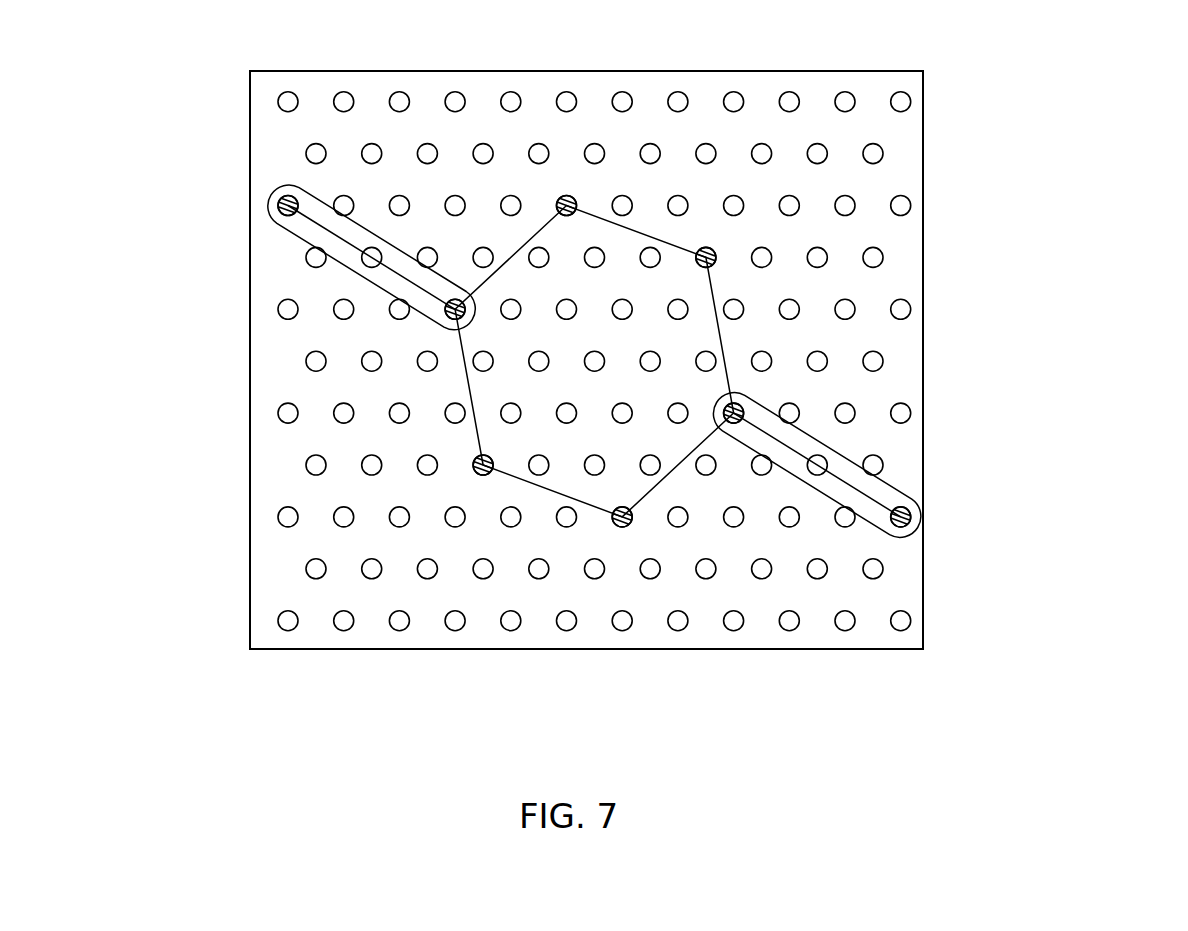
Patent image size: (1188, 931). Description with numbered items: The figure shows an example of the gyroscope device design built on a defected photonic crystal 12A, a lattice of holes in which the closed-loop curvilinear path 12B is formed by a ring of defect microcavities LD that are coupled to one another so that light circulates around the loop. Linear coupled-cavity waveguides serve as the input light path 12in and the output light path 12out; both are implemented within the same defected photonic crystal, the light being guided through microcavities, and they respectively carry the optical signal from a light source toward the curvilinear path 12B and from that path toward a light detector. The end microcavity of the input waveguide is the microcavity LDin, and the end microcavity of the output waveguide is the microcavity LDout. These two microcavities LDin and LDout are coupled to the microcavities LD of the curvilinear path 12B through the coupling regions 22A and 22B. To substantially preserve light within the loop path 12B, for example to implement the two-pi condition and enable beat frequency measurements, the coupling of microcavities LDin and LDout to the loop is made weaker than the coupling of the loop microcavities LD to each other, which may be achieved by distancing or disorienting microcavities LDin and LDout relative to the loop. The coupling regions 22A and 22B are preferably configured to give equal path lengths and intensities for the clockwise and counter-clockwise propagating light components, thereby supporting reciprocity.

The substrate with array of holes 12A is at (582, 70).
The input light path 12in is at (338, 225).
The output light path 12out is at (849, 473).
The curvilinear path 12B is at (523, 492).
The microcavities of path 12B LD is at (578, 203).
The input end microcavity LDin is at (276, 216).
The output end microcavity LDout is at (920, 503).
The coupling region 22A is at (350, 277).
The coupling region 22B is at (822, 507).